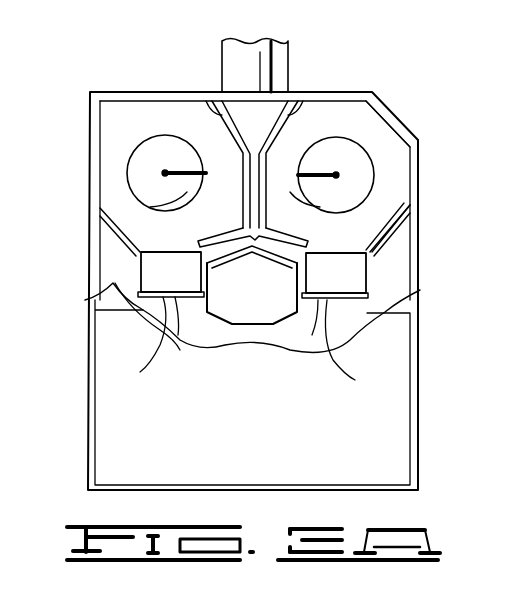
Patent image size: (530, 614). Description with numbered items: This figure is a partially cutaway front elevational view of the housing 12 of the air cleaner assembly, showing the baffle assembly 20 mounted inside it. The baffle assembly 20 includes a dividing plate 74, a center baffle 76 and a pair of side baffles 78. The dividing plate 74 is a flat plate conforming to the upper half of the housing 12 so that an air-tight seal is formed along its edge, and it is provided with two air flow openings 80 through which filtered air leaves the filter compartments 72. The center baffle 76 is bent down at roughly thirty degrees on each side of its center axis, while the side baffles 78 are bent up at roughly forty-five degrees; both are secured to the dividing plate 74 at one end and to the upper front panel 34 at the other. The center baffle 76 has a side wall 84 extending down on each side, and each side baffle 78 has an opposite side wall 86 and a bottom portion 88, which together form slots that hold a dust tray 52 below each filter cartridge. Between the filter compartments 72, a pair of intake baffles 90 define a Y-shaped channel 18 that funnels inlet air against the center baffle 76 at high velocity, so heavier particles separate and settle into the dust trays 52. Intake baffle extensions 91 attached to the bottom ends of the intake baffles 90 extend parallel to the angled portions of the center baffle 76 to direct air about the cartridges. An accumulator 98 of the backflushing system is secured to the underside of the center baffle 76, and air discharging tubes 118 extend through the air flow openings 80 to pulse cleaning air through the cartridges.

The housing 12 is at (91, 86).
The channel 18 is at (258, 120).
The baffle assembly 20 is at (386, 253).
The upper front panel 34 is at (397, 305).
The dust tray 52 is at (153, 297).
The filter compartment 72 is at (367, 123).
The dividing plate 74 is at (118, 120).
The center baffle 76 is at (300, 244).
The side baffle 78 is at (108, 220).
The air flow opening 80 is at (161, 155).
The side wall 84 is at (180, 333).
The side wall 86 is at (157, 280).
The bottom portion 88 is at (140, 372).
The intake baffle 90 is at (214, 110).
The intake baffle extension 91 is at (205, 231).
The accumulator 98 is at (262, 301).
The air discharging tube 118 is at (187, 182).